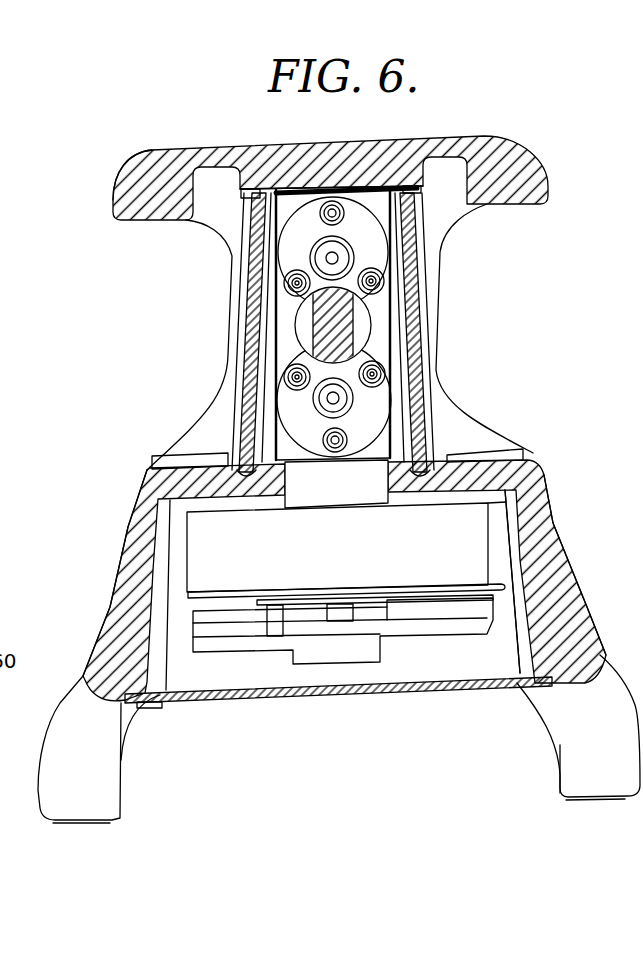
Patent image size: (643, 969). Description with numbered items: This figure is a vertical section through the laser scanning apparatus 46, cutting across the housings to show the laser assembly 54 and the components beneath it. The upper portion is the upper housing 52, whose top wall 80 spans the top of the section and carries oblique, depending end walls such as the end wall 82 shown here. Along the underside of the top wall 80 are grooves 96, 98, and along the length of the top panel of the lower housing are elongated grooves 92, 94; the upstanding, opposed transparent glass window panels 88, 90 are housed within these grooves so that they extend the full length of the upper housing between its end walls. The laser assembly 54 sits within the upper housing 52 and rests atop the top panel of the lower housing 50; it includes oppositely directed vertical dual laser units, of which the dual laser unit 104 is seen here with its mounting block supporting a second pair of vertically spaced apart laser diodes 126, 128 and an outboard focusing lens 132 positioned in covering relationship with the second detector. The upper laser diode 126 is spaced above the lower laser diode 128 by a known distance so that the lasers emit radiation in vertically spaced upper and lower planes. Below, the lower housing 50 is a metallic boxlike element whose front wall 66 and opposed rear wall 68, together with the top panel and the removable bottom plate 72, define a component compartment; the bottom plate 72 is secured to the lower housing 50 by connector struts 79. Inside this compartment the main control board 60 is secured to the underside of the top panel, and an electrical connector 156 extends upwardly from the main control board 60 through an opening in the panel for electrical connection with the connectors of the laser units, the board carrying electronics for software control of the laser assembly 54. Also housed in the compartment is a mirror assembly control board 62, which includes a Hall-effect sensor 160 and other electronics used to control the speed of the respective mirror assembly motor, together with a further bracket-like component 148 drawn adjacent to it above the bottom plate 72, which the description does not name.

The apparatus 46 is at (363, 135).
The upper housing 52 is at (548, 168).
The top wall 80 is at (153, 165).
The dual laser unit 104 is at (291, 186).
The laser assembly 54 is at (360, 188).
The groove 96 is at (247, 200).
The groove 98 is at (412, 189).
The end wall 82 is at (436, 297).
The window panel 88 is at (262, 294).
The window panel 90 is at (421, 328).
The groove 92 is at (240, 482).
The groove 94 is at (436, 478).
The laser diode 126 is at (290, 241).
The laser diode 128 is at (385, 398).
The focusing lens 132 is at (300, 325).
The lower housing 50 is at (130, 492).
The front wall 66 is at (118, 640).
The rear wall 68 is at (565, 620).
The electrical connector 156 is at (320, 493).
The main control board 60 is at (337, 547).
The mirror assembly control board 62 is at (508, 578).
The connector strut 79 is at (517, 652).
The bracket 148 is at (430, 655).
The Hall-effect sensor 160 is at (340, 615).
The bottom plate 72 is at (202, 695).